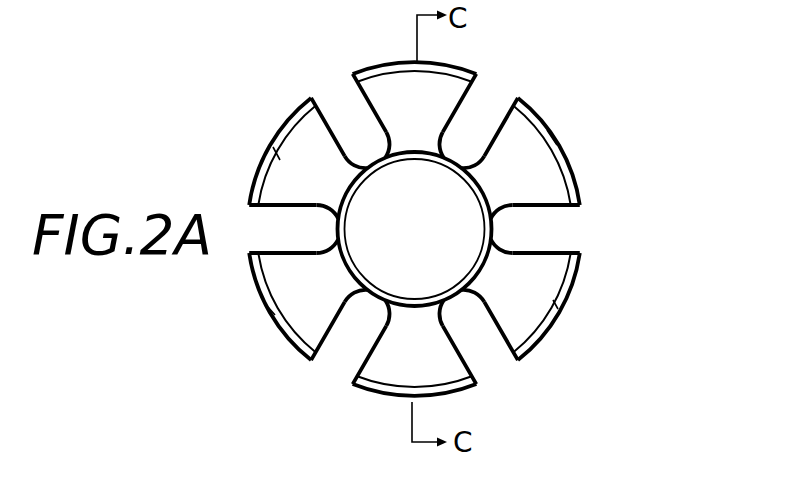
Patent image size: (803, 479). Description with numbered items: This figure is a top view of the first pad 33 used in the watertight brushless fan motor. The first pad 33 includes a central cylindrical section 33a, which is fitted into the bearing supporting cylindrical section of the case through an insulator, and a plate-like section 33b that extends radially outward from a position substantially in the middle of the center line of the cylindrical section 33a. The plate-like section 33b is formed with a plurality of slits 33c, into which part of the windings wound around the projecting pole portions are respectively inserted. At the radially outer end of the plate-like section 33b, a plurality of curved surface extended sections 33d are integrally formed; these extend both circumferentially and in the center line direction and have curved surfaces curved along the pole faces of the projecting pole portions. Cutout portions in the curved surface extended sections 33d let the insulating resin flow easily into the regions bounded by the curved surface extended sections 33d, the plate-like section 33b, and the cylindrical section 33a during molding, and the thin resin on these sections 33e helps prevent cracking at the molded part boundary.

The first pad 33 is at (272, 115).
The cylindrical section 33a is at (497, 224).
The plate-like section 33b is at (510, 150).
The slits 33c is at (480, 88).
The curved surface extended sections 33d is at (270, 128).
The chamfered edge 33e is at (257, 177).